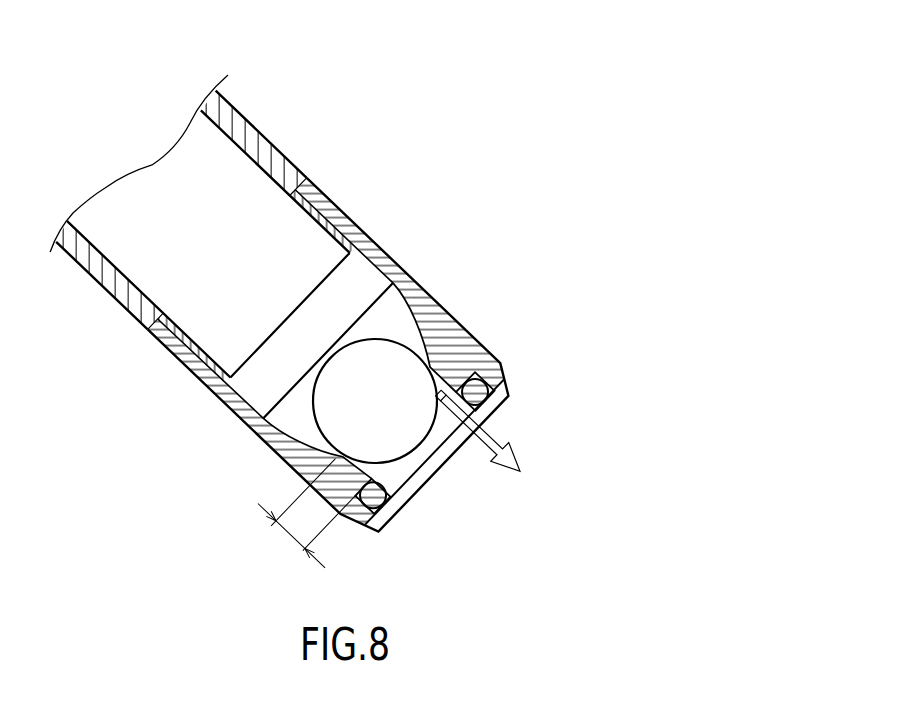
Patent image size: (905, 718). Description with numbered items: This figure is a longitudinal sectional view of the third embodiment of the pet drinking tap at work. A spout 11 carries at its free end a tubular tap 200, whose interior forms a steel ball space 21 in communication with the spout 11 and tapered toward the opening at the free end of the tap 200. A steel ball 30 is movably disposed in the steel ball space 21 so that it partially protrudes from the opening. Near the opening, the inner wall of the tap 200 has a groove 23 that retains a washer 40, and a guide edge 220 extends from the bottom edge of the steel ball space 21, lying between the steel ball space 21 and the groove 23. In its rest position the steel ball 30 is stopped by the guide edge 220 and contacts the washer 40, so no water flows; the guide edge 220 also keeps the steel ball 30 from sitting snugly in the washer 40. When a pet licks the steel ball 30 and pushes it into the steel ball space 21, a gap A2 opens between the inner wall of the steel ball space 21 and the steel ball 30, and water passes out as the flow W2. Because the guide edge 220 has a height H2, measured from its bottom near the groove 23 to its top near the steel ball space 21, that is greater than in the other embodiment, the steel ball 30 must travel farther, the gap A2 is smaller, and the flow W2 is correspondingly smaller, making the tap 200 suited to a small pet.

The spout 11 is at (257, 142).
The tap 200 is at (370, 240).
The gap A2 is at (422, 353).
The steel ball space 21 is at (420, 332).
The groove 23 is at (505, 403).
The flow of water W2 is at (503, 440).
The steel ball 30 is at (352, 416).
The height H2 is at (288, 537).
The washer 40 is at (355, 518).
The guide edge 220 is at (395, 490).